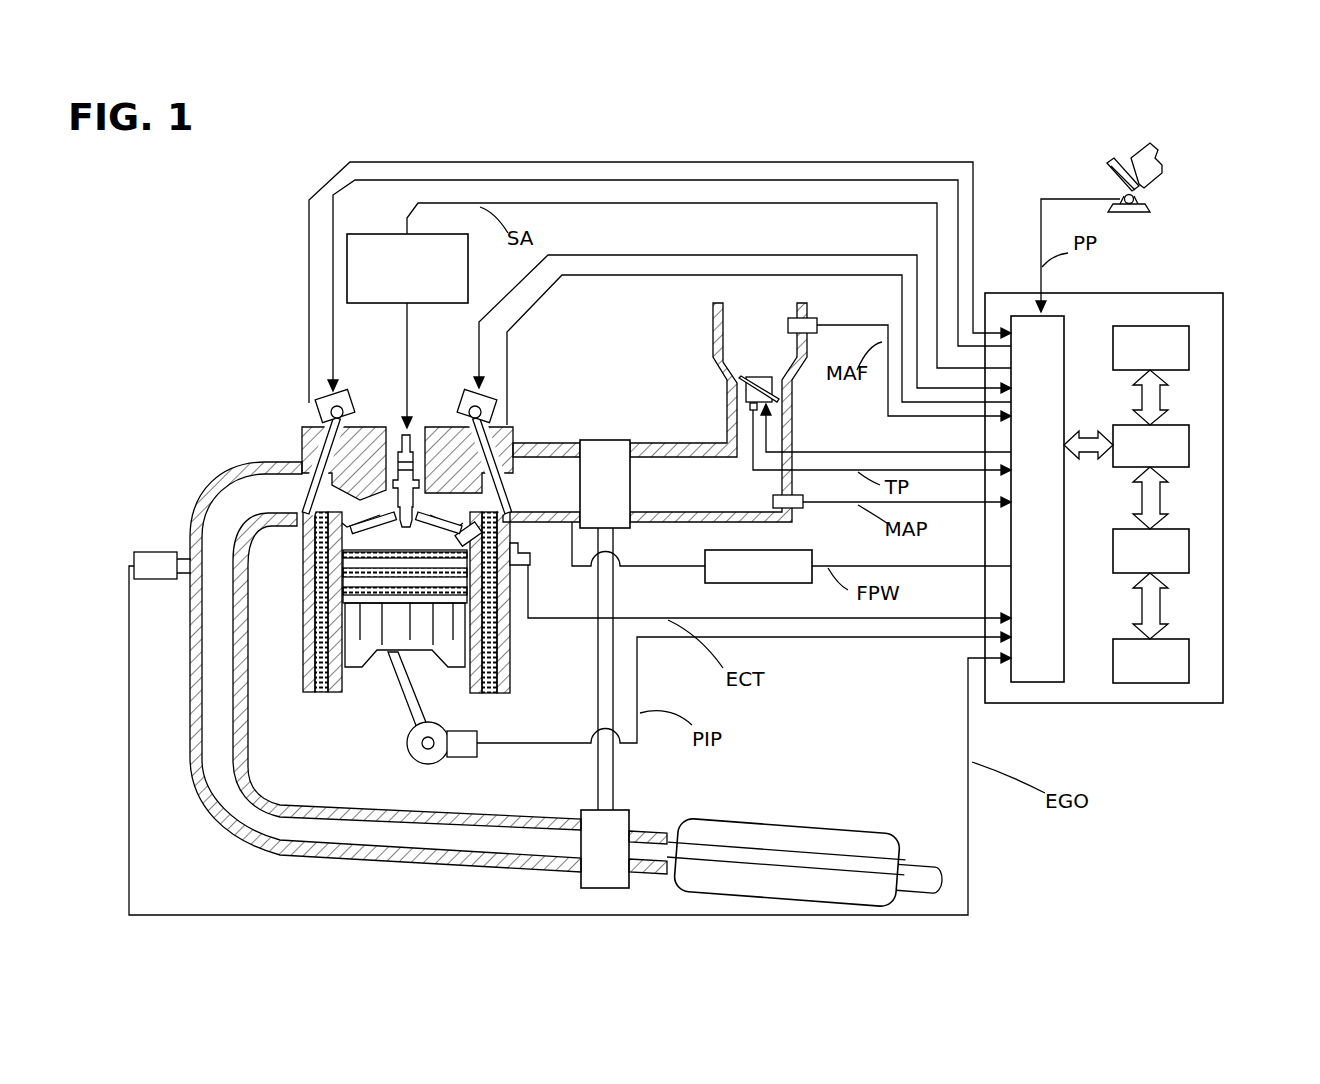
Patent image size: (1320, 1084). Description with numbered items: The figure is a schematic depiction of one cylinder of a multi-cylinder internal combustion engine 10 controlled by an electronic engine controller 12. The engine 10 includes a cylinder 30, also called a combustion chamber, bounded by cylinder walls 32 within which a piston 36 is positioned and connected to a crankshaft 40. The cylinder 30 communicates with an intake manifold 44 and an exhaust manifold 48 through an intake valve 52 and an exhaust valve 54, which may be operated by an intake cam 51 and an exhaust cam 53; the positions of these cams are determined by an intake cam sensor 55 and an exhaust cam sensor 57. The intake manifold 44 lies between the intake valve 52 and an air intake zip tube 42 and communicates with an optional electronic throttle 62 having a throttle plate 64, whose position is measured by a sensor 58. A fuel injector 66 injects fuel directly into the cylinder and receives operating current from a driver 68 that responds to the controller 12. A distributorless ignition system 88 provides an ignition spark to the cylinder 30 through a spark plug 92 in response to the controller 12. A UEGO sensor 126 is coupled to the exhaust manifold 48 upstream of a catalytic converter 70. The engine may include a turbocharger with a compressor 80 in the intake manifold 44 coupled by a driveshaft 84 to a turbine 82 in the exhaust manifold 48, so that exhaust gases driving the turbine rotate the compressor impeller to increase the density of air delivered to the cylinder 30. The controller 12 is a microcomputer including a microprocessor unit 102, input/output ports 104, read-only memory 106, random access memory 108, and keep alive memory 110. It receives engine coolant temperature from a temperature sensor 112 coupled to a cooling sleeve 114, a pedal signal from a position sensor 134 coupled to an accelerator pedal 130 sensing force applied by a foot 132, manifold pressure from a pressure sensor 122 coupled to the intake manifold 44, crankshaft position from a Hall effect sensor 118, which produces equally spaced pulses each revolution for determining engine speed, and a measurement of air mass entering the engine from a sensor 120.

The internal combustion engine 10 is at (235, 382).
The electronic engine controller 12 is at (1213, 292).
The cylinder 30 is at (317, 645).
The cylinder walls 32 is at (343, 678).
The piston 36 is at (388, 637).
The crankshaft 40 is at (418, 763).
The air intake zip tube 42 is at (718, 412).
The intake manifold 44 is at (541, 482).
The exhaust manifold 48 is at (428, 668).
The intake cam 51 is at (470, 395).
The intake valve 52 is at (460, 493).
The exhaust cam 53 is at (347, 395).
The exhaust valve 54 is at (362, 505).
The intake cam sensor 55 is at (490, 414).
The exhaust cam sensor 57 is at (323, 418).
The throttle position sensor 58 is at (750, 407).
The electronic throttle 62 is at (767, 385).
The throttle plate 64 is at (743, 380).
The fuel injector 66 is at (507, 520).
The driver 68 is at (733, 585).
The catalytic converter 70 is at (853, 828).
The compressor 80 is at (605, 484).
The turbine 82 is at (605, 849).
The driveshaft 84 is at (605, 670).
The distributorless ignition system 88 is at (361, 234).
The spark plug 92 is at (417, 433).
The microprocessor unit 102 is at (1189, 443).
The input/output ports 104 is at (1065, 325).
The read-only memory 106 is at (1189, 344).
The random access memory 108 is at (1189, 548).
The keep alive memory 110 is at (1189, 657).
The temperature sensor 112 is at (517, 563).
The cooling sleeve 114 is at (490, 652).
The Hall effect sensor 118 is at (462, 760).
The air mass sensor 120 is at (810, 318).
The pressure sensor 122 is at (803, 508).
The Universal Exhaust Gas Oxygen (UEGO) sensor 126 is at (134, 556).
The accelerator pedal 130 is at (1108, 173).
The foot 132 is at (1162, 160).
The position sensor 134 is at (1140, 198).